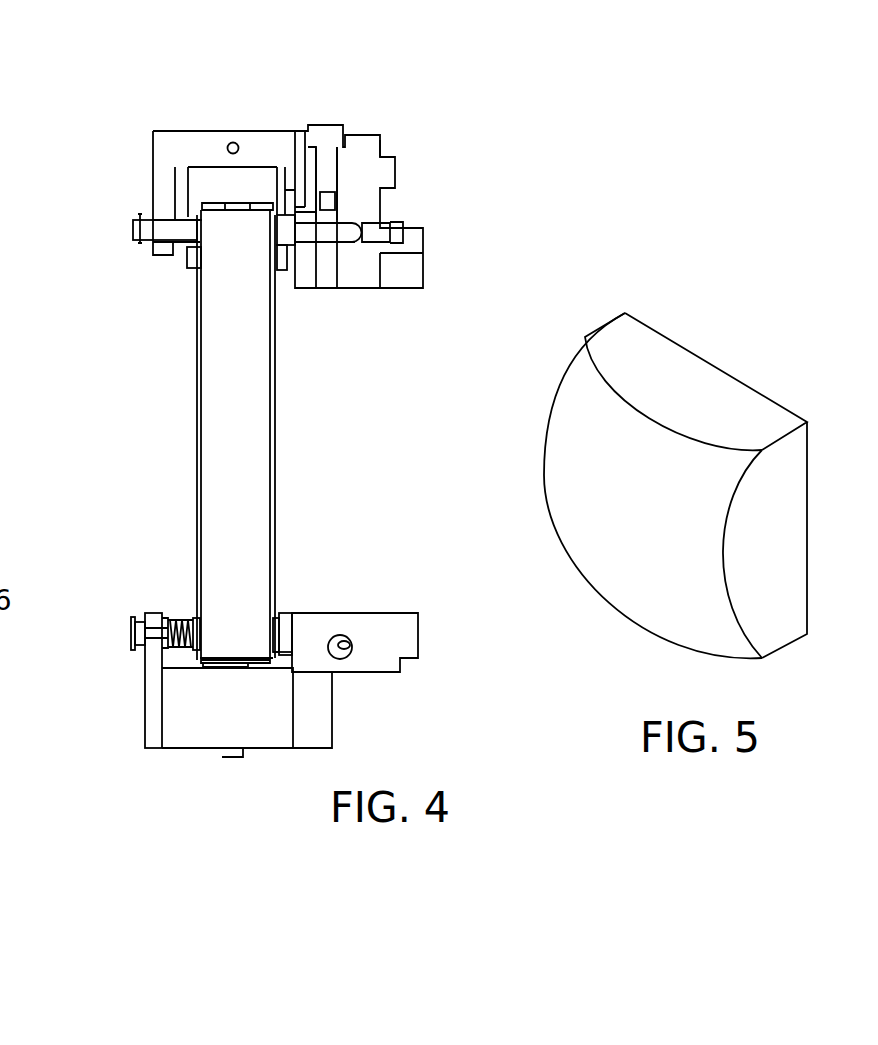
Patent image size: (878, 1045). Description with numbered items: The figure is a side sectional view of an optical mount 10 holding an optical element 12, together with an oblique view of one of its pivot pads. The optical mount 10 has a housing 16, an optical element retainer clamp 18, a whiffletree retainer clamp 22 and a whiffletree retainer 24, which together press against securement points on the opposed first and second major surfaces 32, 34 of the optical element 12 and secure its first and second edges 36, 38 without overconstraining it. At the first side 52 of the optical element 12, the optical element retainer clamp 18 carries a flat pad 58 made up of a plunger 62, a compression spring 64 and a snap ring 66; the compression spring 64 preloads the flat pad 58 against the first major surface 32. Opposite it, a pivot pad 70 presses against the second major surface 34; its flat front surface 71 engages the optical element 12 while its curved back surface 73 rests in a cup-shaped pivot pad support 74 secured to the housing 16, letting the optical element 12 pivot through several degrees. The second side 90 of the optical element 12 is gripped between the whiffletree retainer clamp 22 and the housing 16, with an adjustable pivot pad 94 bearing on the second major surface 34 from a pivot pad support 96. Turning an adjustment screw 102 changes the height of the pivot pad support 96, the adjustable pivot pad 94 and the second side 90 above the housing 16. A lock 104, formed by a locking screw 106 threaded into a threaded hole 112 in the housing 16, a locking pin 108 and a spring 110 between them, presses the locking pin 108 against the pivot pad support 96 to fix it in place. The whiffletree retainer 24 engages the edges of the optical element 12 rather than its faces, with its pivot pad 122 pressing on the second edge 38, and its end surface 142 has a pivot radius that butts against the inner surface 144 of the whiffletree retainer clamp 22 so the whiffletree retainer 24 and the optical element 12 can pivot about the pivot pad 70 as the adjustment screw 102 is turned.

In FIG. 4, the optical mount 10 is at (128, 110).
In FIG. 4, the optical element 12 is at (220, 413).
In FIG. 4, the housing 16 is at (400, 278).
In FIG. 4, the optical element retainer clamp 18 is at (157, 707).
In FIG. 4, the whiffletree retainer clamp 22 is at (170, 143).
In FIG. 4, the whiffletree retainer 24 is at (198, 180).
In FIG. 4, the first major surface 32 is at (198, 357).
In FIG. 4, the second major surface 34 is at (274, 373).
In FIG. 4, the first edge 36 is at (207, 668).
In FIG. 4, the second edge 38 is at (283, 197).
In FIG. 4, the first side 52 is at (235, 608).
In FIG. 4, the flat pad 58 is at (126, 650).
In FIG. 4, the plunger 62 is at (130, 632).
In FIG. 4, the compression spring 64 is at (180, 618).
In FIG. 4, the snap ring 66 is at (132, 620).
In FIG. 4, the pivot pad 70 is at (283, 628).
In FIG. 5, the pivot pad 70 is at (616, 308).
In FIG. 5, the flat front surface 71 is at (818, 507).
In FIG. 5, the curved back surface 73 is at (628, 597).
In FIG. 4, the pivot pad support 74 is at (290, 615).
In FIG. 4, the second side 90 is at (228, 250).
In FIG. 4, the adjustable pivot pad 94 is at (329, 137).
In FIG. 4, the pivot pad support 96 is at (352, 225).
In FIG. 4, the adjustment screw 102 is at (397, 232).
In FIG. 4, the lock 104 is at (440, 99).
In FIG. 4, the locking screw 106 is at (350, 140).
In FIG. 4, the locking pin 108 is at (326, 215).
In FIG. 4, the spring 110 is at (340, 188).
In FIG. 4, the threaded hole 112 is at (387, 128).
In FIG. 4, the pivot pad 122 is at (235, 203).
In FIG. 4, the end surface 142 is at (207, 168).
In FIG. 4, the inner surface 144 is at (200, 168).